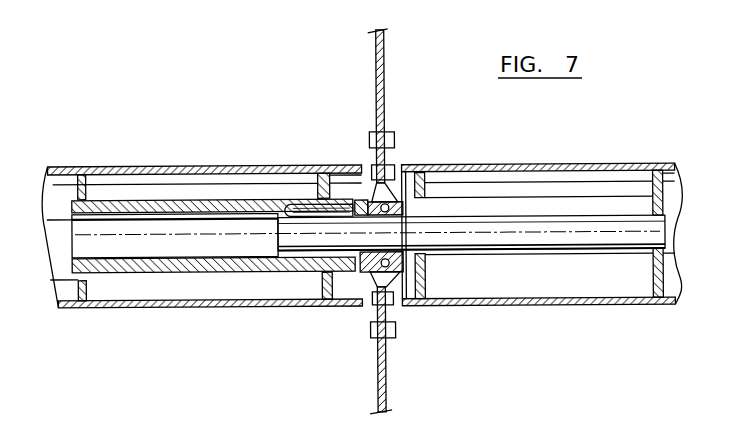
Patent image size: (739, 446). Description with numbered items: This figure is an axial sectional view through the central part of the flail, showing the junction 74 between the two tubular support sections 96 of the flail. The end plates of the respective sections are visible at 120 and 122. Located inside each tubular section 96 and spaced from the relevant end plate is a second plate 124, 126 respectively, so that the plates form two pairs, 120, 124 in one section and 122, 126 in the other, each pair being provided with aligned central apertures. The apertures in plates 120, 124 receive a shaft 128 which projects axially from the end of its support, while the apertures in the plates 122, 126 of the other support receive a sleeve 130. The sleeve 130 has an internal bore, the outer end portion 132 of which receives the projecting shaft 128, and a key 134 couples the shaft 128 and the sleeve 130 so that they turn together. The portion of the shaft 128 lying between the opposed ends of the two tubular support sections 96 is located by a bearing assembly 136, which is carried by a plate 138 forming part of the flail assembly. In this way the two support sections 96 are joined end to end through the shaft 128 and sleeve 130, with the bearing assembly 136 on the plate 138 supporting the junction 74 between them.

The telescopic strut assembly 74 is at (249, 351).
The support section 96 is at (196, 166).
The end plate 120 is at (427, 178).
The end plate 122 is at (316, 190).
The second plate 124 is at (652, 185).
The second plate 126 is at (67, 166).
The shaft 128 is at (532, 238).
The sleeve 130 is at (205, 257).
The outer end portion 132 is at (283, 273).
The key 134 is at (288, 202).
The bearing assembly 136 is at (369, 280).
The plate 138 is at (386, 82).